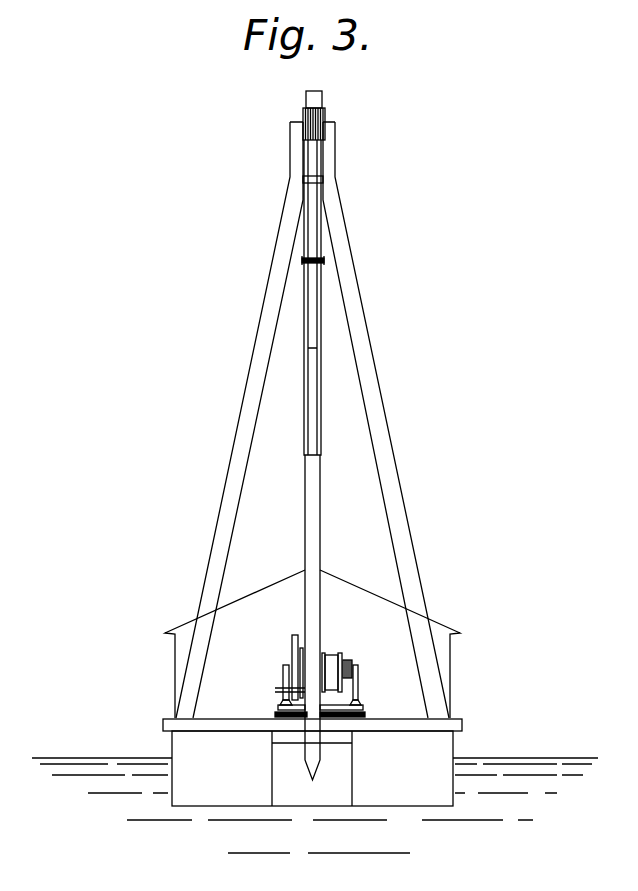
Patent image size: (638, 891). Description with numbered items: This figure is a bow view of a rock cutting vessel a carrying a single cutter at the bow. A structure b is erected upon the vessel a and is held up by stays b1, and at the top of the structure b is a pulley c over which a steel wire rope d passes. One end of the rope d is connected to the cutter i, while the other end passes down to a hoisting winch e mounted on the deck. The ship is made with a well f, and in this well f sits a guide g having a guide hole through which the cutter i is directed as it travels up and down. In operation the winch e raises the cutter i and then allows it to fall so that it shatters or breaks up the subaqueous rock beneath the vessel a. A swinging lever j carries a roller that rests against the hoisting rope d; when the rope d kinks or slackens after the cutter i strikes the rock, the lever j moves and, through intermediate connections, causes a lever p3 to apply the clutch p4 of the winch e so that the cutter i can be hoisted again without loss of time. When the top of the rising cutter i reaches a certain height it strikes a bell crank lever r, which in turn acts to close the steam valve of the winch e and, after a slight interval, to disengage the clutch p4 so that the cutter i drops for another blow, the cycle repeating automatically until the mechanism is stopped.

The vessel a is at (312, 768).
The well f is at (312, 768).
The guide g is at (342, 733).
The stays b1 is at (352, 288).
The structure b is at (305, 318).
The steel wire rope d is at (313, 165).
The pulley c is at (322, 108).
The swinging lever j is at (322, 194).
The bell crank lever r is at (327, 262).
The cutter i is at (313, 480).
The hoisting winch e is at (303, 682).
The lever p3 is at (342, 685).
The clutch p4 is at (347, 663).